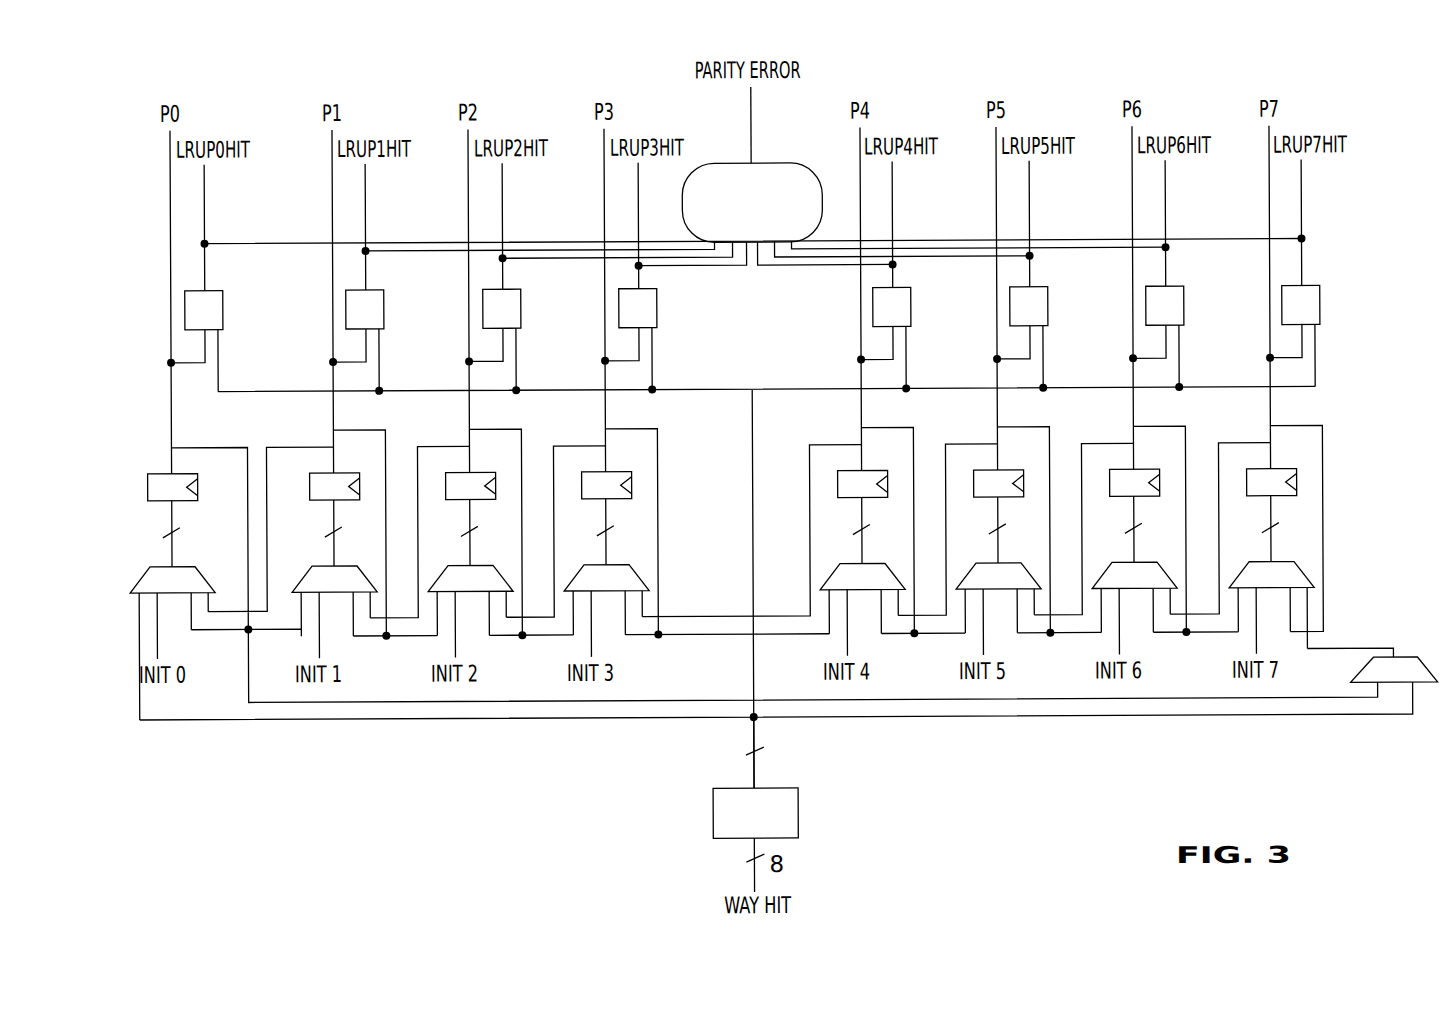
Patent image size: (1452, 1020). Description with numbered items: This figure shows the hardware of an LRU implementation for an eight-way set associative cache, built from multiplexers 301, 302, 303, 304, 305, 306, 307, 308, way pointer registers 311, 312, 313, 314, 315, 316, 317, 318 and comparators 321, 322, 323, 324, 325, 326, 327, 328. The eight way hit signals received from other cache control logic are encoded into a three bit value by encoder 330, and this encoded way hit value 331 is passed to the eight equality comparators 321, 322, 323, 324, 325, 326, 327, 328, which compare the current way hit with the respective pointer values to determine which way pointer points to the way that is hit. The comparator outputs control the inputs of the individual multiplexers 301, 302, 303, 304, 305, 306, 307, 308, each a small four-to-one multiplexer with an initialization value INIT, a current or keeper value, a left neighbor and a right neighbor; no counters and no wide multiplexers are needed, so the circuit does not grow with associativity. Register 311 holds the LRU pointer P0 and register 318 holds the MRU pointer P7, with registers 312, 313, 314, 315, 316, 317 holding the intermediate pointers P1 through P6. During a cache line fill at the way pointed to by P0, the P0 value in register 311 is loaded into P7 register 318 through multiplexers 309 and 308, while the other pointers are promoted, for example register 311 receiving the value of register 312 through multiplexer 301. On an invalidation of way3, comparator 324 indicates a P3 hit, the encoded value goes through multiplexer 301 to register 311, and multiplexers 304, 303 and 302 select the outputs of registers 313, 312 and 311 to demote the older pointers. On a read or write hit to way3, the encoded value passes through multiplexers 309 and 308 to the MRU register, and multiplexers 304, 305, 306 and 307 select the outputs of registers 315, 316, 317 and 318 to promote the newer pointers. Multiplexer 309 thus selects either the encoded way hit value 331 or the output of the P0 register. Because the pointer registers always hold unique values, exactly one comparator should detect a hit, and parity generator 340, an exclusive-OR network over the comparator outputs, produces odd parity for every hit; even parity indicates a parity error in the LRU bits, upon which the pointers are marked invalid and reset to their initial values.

The multiplexer 301 is at (160, 567).
The multiplexer 302 is at (322, 567).
The multiplexer 303 is at (458, 567).
The multiplexer 304 is at (594, 567).
The multiplexer 305 is at (850, 567).
The multiplexer 306 is at (986, 567).
The multiplexer 307 is at (1122, 567).
The multiplexer 308 is at (1259, 567).
The multiplexer 309 is at (1395, 663).
The way pointer register 311 is at (163, 474).
The way pointer register 312 is at (343, 474).
The way pointer register 313 is at (479, 474).
The way pointer register 314 is at (615, 474).
The way pointer register 315 is at (871, 474).
The way pointer register 316 is at (1007, 474).
The way pointer register 317 is at (1143, 474).
The way pointer register 318 is at (1280, 474).
The comparator 321 is at (224, 297).
The comparator 322 is at (385, 297).
The comparator 323 is at (522, 297).
The comparator 324 is at (658, 297).
The comparator 325 is at (912, 297).
The comparator 326 is at (1049, 297).
The comparator 327 is at (1185, 297).
The comparator 328 is at (1321, 297).
The encoder 330 is at (797, 798).
The encoded way hit value 331 is at (756, 724).
The parity generator 340 is at (786, 166).